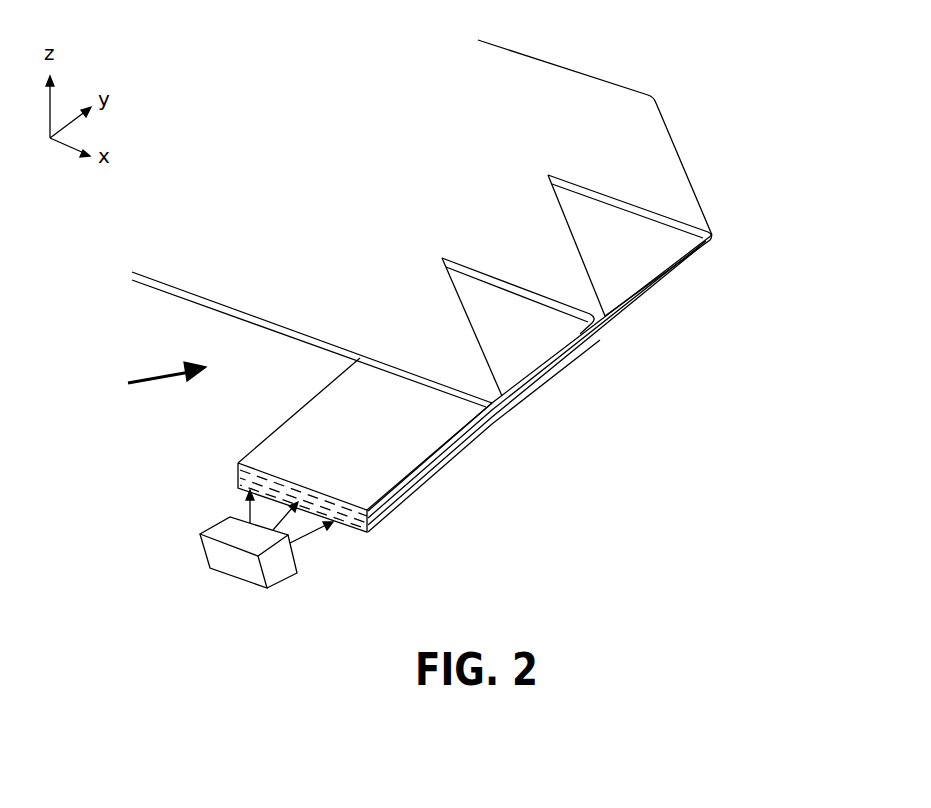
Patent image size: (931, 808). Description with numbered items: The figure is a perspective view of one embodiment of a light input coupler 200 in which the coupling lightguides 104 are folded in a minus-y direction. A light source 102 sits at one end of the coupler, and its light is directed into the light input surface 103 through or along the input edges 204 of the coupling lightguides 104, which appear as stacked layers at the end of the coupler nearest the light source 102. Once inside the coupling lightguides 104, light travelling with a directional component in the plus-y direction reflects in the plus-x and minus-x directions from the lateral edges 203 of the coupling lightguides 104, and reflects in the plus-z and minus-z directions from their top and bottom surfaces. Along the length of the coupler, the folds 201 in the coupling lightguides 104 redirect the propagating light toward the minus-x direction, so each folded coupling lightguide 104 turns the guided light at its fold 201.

The light input coupler 200 is at (139, 378).
The light source 102 is at (282, 568).
The light input surface 103 is at (355, 530).
The coupling lightguide 104 is at (653, 165).
The fold 201 is at (698, 203).
The lateral edge 203 is at (462, 428).
The input edge 204 is at (240, 481).